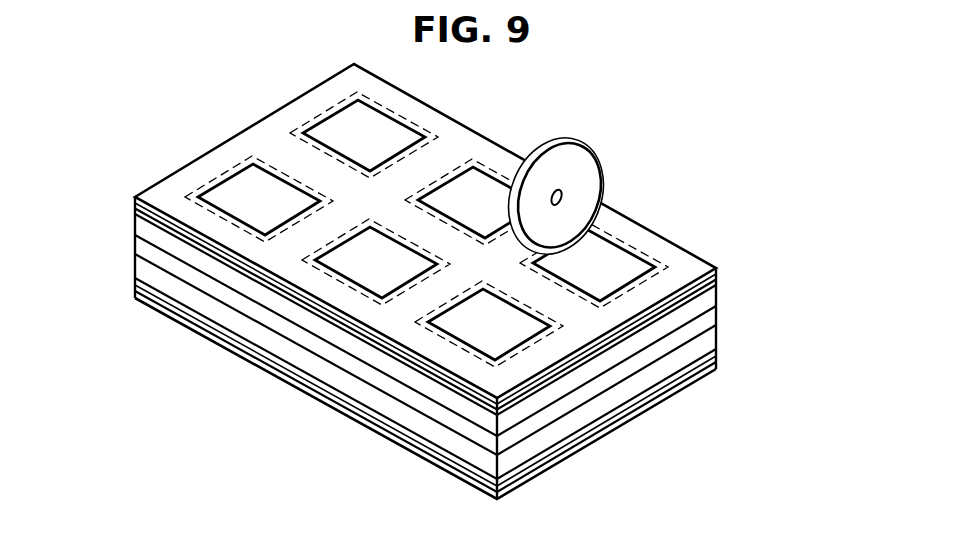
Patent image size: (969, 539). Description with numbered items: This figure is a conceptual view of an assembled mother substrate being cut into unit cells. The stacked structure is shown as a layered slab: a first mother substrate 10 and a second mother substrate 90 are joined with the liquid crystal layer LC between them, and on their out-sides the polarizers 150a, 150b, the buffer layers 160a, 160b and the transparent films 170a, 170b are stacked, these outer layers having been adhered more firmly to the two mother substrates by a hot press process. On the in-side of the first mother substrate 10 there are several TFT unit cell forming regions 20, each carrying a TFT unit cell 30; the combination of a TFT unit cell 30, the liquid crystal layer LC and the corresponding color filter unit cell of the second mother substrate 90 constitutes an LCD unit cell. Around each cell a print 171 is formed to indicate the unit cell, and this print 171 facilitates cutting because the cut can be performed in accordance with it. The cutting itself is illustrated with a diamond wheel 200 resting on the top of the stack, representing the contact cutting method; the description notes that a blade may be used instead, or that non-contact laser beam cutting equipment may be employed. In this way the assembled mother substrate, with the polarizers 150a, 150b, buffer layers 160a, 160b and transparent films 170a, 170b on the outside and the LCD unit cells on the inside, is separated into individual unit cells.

The TFT unit cell 30 is at (266, 206).
The diamond wheel 200 is at (598, 156).
The print 171 is at (617, 251).
The TFT unit cell forming region 20 is at (652, 263).
The transparent film 170a is at (717, 271).
The buffer layer 160a is at (717, 277).
The polarizer 150a is at (717, 282).
The first mother substrate 10 is at (716, 300).
The liquid crystal layer LC is at (717, 318).
The second mother substrate 90 is at (717, 340).
The polarizer 150b is at (717, 352).
The buffer layer 160b is at (717, 358).
The transparent film 170b is at (717, 364).